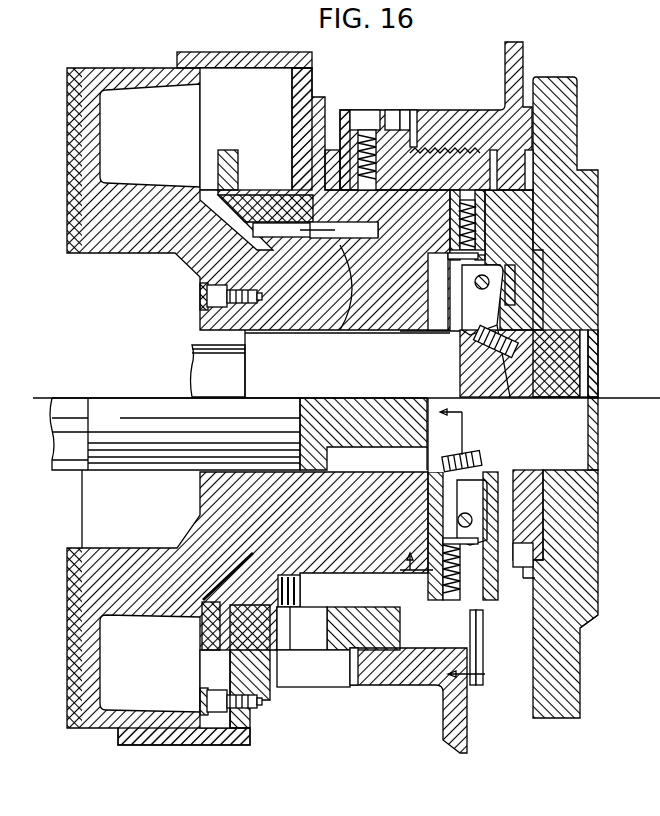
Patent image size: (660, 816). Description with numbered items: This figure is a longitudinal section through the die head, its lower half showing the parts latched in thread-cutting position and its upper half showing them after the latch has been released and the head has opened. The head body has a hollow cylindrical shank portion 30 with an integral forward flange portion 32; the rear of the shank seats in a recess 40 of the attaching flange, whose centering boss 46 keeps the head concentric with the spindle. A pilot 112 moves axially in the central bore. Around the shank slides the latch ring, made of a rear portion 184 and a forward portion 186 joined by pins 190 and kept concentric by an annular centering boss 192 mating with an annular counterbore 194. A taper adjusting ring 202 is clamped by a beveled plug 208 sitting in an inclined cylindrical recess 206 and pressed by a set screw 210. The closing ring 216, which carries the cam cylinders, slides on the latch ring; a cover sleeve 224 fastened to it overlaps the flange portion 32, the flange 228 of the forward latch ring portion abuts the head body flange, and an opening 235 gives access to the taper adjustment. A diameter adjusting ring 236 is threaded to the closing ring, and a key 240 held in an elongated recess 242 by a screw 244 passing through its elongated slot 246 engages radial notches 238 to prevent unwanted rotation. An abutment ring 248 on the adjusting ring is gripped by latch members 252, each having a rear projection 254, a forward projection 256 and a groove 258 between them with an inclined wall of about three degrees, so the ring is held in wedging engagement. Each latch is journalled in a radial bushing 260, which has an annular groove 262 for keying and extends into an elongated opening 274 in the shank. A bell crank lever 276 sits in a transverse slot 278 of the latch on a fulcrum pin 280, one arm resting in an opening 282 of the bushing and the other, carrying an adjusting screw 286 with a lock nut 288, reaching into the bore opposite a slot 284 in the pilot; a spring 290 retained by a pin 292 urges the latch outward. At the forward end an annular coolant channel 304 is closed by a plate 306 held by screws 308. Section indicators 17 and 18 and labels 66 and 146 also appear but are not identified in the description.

The section line 17 is at (464, 570).
The section line 18 is at (475, 543).
The shank portion 30 is at (352, 337).
The forward flange portion 32 is at (153, 116).
The recess 40 is at (543, 500).
The centering boss 46 is at (595, 622).
The housing 66 is at (68, 120).
The pilot 112 is at (295, 371).
The end wall 146 is at (598, 418).
The rear portion of latch ring 184 is at (368, 223).
The forward portion of latch ring 186 is at (250, 192).
The pins 190 is at (313, 225).
The annular centering boss 192 is at (340, 334).
The annular counterbore 194 is at (312, 548).
The taper adjusting ring 202 is at (292, 630).
The cylindrical recess 206 is at (285, 578).
The plug 208 is at (297, 650).
The set screw 210 is at (290, 648).
The closing ring 216 is at (312, 80).
The cover sleeve 224 is at (263, 58).
The flange 228 is at (193, 636).
The opening 235 is at (287, 650).
The diameter adjusting ring 236 is at (397, 110).
The radial notches 238 is at (413, 118).
The key 240 is at (404, 115).
The recess 242 is at (333, 120).
The screw 244 is at (372, 115).
The elongated slot 246 is at (395, 115).
The abutment ring 248 is at (530, 172).
The latch members 252 is at (495, 212).
The rear projection 254 is at (490, 185).
The forward projection 256 is at (452, 205).
The groove 258 is at (480, 190).
The bushing 260 is at (455, 318).
The annular groove 262 is at (516, 598).
The elongated opening 274 is at (410, 333).
The bell crank lever 276 is at (432, 300).
The transverse slot 278 is at (428, 498).
The pin 280 is at (470, 282).
The opening 282 is at (505, 283).
The slot 284 is at (582, 338).
The adjusting screw 286 is at (487, 452).
The lock nut 288 is at (516, 345).
The spring 290 is at (452, 222).
The pin 292 is at (450, 260).
The annular channel 304 is at (205, 305).
The plate 306 is at (200, 284).
The screws 308 is at (203, 295).